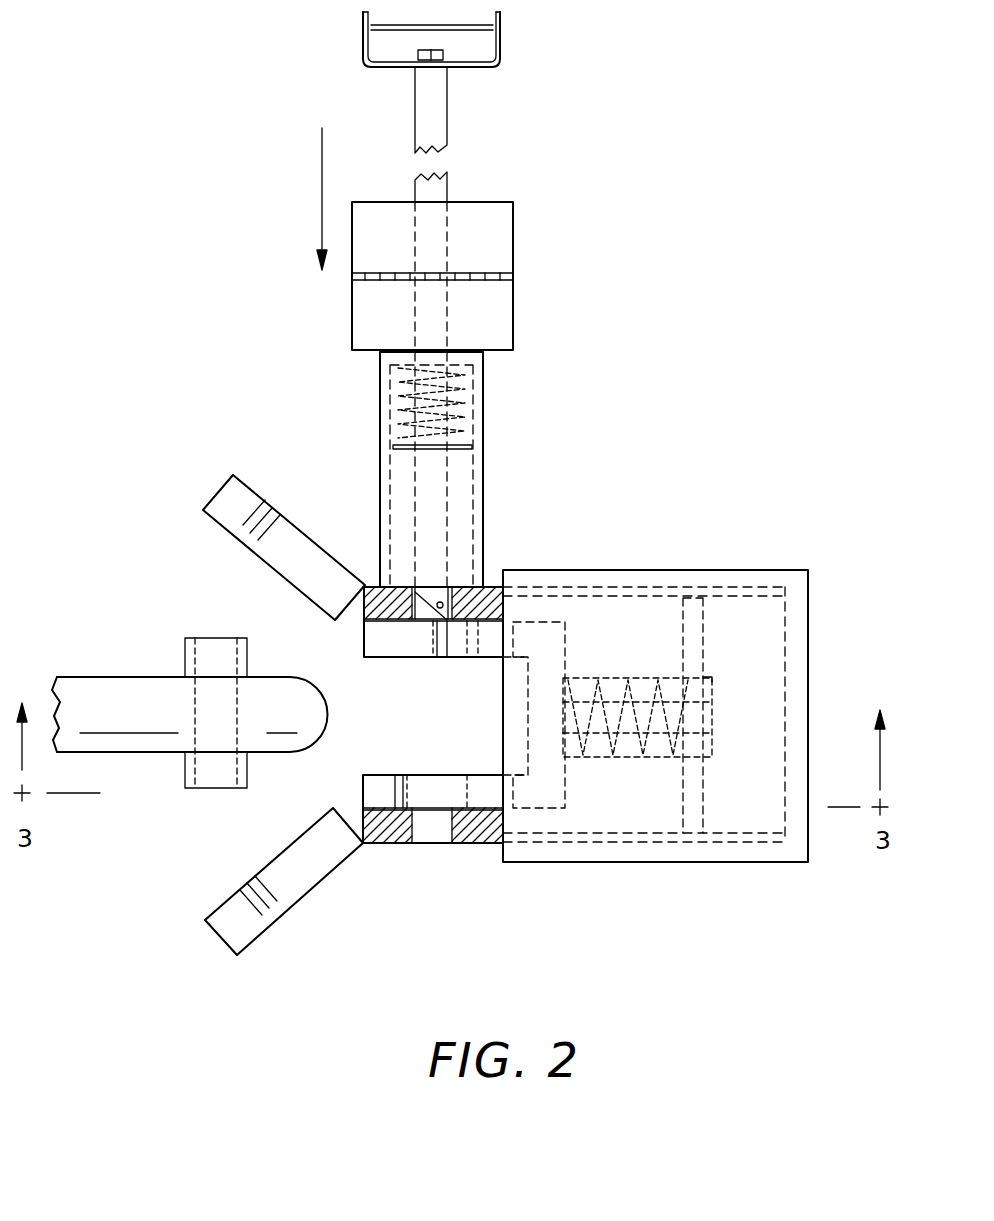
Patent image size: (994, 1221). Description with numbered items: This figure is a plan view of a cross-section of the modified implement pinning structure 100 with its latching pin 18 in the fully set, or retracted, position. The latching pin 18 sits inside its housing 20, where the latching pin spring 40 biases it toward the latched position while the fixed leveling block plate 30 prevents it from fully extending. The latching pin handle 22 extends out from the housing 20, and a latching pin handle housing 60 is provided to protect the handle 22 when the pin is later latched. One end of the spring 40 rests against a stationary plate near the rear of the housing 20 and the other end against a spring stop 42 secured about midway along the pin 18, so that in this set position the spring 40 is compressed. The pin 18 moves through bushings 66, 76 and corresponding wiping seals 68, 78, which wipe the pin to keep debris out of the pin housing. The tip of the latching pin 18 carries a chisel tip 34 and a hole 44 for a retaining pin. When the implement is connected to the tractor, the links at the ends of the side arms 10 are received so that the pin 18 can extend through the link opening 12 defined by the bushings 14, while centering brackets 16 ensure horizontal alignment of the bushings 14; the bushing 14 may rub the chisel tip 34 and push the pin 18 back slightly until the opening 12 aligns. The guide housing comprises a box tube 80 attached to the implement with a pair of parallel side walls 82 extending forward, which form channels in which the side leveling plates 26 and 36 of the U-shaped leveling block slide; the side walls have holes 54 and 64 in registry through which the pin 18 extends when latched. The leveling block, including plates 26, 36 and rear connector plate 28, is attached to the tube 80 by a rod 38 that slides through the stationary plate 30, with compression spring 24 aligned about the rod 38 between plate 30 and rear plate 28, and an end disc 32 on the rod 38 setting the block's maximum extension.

The pinning structure 100 is at (177, 372).
The latching pin handle 22 is at (503, 42).
The latching pin handle housing 60 is at (513, 307).
The latching pin housing 20 is at (485, 410).
The latching pin 18 is at (430, 487).
The latching pin spring 40 is at (381, 419).
The spring stop 42 is at (397, 452).
The wiping seal 78 is at (413, 348).
The bushing 76 is at (378, 363).
The leveling plate 36 is at (364, 652).
The bushing 66 is at (412, 593).
The hole 44 is at (442, 600).
The chisel tip 34 is at (432, 617).
The wiping seal 68 is at (408, 620).
The hole 64 is at (425, 614).
The side wall 82 is at (495, 587).
The centering bracket 16 is at (230, 510).
The side arm 10 is at (113, 706).
The bushing 14 is at (185, 645).
The link opening 12 is at (210, 790).
The leveling plate 26 is at (382, 778).
The hole 54 is at (430, 833).
The box tube 80 is at (757, 570).
The end disc 32 is at (712, 682).
The spring 24 is at (657, 670).
The rod 38 is at (587, 687).
The rear plate 28 is at (567, 783).
The leveling block plate 30 is at (707, 813).